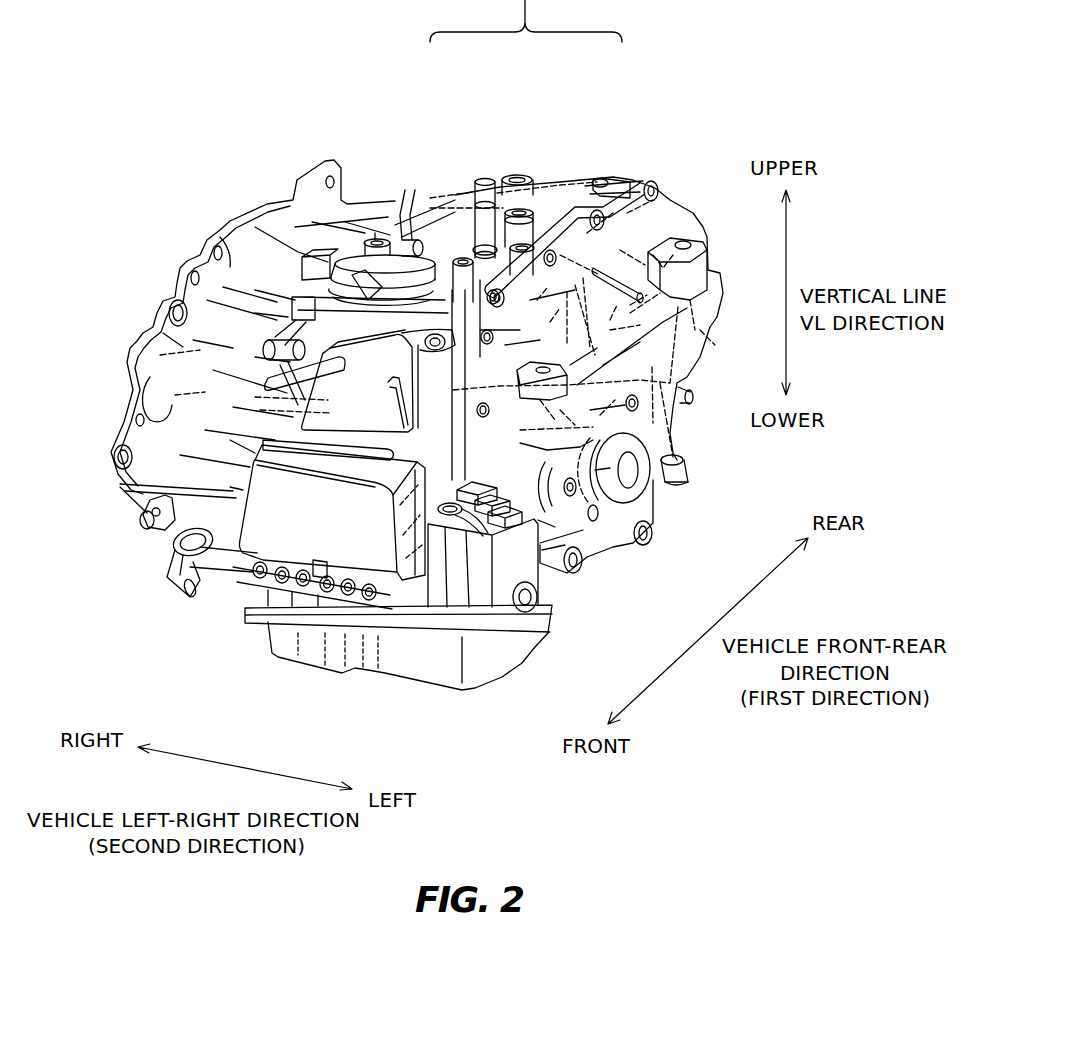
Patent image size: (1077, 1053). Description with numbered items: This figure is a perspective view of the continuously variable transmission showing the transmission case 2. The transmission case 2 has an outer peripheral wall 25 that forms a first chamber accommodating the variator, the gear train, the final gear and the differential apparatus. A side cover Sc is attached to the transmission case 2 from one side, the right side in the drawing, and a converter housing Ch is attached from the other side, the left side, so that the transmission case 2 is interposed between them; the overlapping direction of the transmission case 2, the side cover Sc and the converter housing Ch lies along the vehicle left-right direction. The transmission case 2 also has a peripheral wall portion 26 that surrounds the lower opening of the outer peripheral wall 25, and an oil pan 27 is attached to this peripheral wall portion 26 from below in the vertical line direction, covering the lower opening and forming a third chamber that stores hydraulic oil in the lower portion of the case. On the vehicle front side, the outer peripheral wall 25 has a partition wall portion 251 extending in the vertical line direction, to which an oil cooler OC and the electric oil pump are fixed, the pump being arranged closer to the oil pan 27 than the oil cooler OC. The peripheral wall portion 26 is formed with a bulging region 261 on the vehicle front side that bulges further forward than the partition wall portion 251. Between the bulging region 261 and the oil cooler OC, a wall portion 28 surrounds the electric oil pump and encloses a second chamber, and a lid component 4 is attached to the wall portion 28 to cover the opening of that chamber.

The transmission case 2 is at (404, 433).
The converter housing Ch is at (358, 192).
The side cover Sc is at (675, 195).
The oil cooler OC is at (140, 335).
The outer peripheral wall 25 is at (553, 188).
The partition wall portion 251 is at (680, 375).
The wall portion 28 is at (650, 440).
The lid component 4 is at (267, 533).
The bulging region 261 is at (333, 592).
The peripheral wall portion 26 is at (413, 600).
The oil pan 27 is at (503, 680).